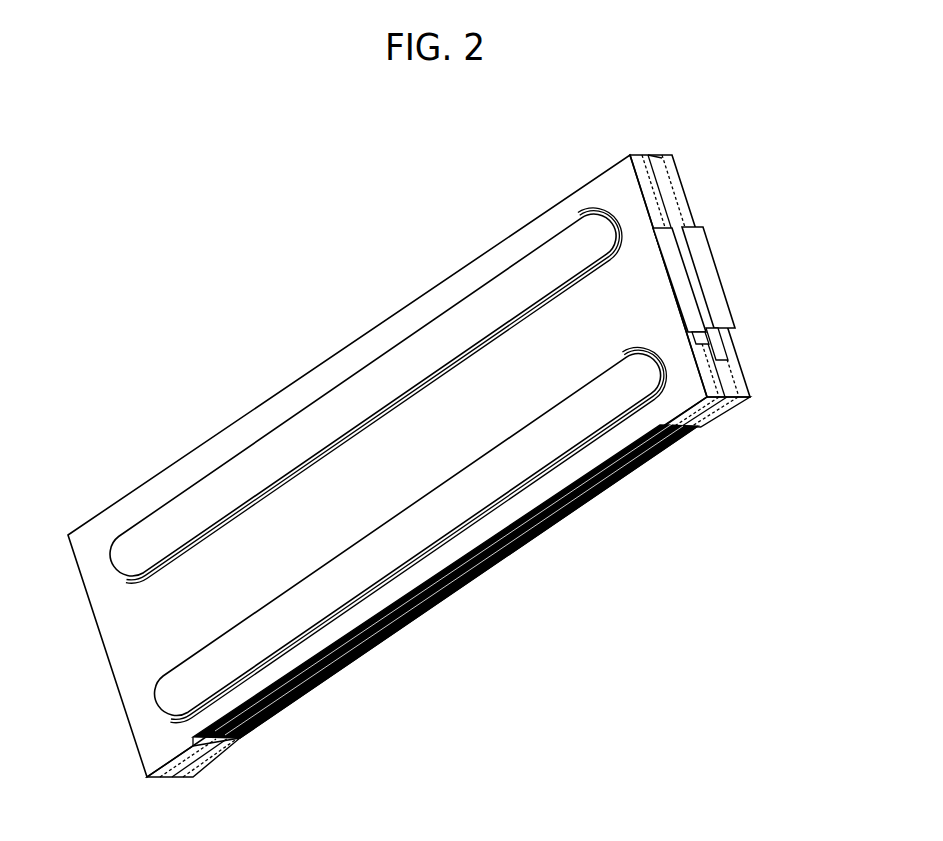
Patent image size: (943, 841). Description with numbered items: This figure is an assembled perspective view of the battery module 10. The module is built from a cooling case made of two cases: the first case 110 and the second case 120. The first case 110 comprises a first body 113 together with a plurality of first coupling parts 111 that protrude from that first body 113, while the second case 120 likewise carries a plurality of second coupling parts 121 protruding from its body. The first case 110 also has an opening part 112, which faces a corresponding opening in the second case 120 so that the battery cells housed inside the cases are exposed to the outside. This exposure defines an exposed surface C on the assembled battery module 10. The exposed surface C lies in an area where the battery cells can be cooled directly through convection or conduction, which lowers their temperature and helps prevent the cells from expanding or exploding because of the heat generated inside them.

The battery module 10 is at (81, 110).
The first case 110 is at (487, 223).
The first coupling parts 111 is at (160, 757).
The opening part 112 is at (308, 664).
The first body 113 is at (337, 474).
The second case 120 is at (759, 358).
The second coupling parts 121 is at (726, 418).
The exposed surface C is at (398, 634).